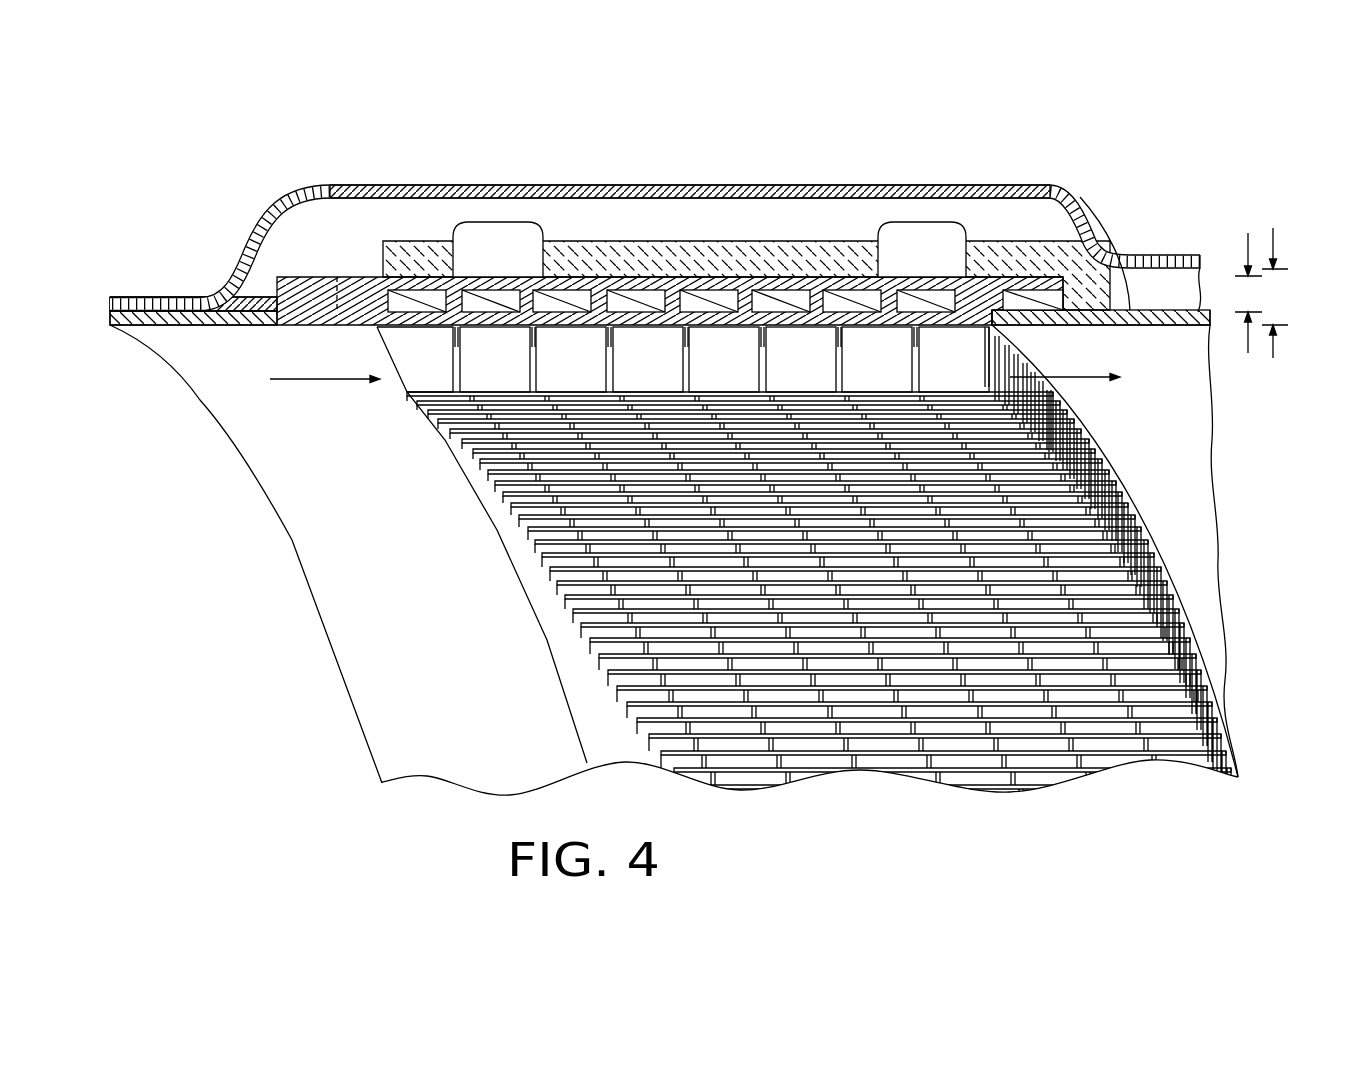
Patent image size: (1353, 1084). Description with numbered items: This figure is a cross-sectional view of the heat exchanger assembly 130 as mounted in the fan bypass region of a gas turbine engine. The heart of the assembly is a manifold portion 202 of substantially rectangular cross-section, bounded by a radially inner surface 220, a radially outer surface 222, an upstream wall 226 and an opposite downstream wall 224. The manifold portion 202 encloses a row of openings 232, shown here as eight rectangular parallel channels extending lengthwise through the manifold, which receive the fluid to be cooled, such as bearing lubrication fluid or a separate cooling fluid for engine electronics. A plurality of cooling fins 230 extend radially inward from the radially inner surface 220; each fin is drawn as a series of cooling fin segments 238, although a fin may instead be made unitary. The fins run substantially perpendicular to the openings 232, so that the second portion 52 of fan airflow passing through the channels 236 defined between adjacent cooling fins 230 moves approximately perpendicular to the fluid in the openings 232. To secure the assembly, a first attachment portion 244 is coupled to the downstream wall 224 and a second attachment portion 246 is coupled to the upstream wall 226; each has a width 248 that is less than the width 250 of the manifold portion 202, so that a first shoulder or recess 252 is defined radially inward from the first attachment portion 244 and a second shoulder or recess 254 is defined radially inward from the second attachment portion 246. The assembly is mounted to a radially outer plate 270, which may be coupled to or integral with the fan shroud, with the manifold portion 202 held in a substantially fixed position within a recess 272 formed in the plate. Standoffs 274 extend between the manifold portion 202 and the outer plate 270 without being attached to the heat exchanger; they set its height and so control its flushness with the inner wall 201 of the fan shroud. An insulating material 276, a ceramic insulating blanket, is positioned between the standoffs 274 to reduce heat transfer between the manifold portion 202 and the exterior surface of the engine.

The heat exchanger assembly 130 is at (195, 185).
The inner wall 201 is at (1143, 326).
The manifold portion 202 is at (368, 290).
The radially inner surface 220 is at (380, 342).
The radially outer surface 222 is at (762, 275).
The downstream wall 224 is at (1003, 292).
The upstream wall 226 is at (330, 292).
The cooling fins 230 is at (1105, 465).
The openings 232 is at (787, 297).
The channels 236 is at (1163, 610).
The cooling fin segments 238 is at (904, 376).
The first attachment portion 244 is at (1042, 285).
The second attachment portion 246 is at (276, 280).
The width 248 is at (1248, 236).
The width 250 is at (1273, 228).
The first shoulder or recess 252 is at (1072, 288).
The second shoulder or recess 254 is at (288, 304).
The radially outer plate 270 is at (565, 183).
The recess 272 is at (976, 218).
The standoffs 274 is at (946, 261).
The insulating material 276 is at (714, 245).
The second portion 52 is at (1222, 728).